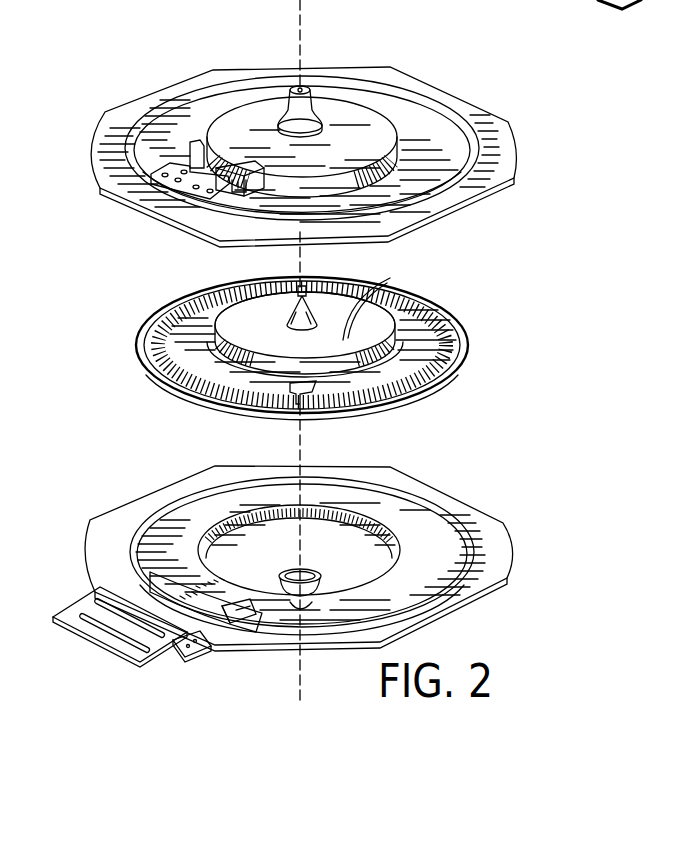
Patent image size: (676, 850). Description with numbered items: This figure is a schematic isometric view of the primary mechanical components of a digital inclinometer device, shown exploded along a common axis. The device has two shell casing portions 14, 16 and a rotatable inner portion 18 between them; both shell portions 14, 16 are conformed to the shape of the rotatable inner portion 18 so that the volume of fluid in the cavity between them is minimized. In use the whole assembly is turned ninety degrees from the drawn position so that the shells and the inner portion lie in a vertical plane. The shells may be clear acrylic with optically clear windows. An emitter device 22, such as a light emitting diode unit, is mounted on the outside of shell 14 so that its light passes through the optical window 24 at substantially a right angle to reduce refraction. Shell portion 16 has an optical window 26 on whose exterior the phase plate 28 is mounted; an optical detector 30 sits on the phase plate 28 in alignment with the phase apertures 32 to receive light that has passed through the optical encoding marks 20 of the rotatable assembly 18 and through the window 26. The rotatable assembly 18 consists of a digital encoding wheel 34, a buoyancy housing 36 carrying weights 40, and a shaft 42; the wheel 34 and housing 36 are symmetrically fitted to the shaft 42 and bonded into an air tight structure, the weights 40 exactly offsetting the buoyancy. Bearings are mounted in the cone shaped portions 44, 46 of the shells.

The shell casing portion 14 is at (468, 98).
The shell casing portion 16 is at (524, 524).
The rotatable inner portion 18 is at (480, 357).
The optical encoding marks 20 is at (450, 342).
The emitter device 22 is at (188, 198).
The optical window 24 is at (243, 194).
The optical window 26 is at (181, 554).
The phase plate 28 is at (250, 620).
The optical detector 30 is at (207, 662).
The phase apertures 32 is at (188, 566).
The digital encoding wheel 34 is at (447, 388).
The buoyancy housing 36 is at (392, 278).
The weights 40 is at (420, 292).
The shaft 42 is at (306, 308).
The cone shaped portion 44 is at (303, 83).
The cone shaped portion 46 is at (345, 588).